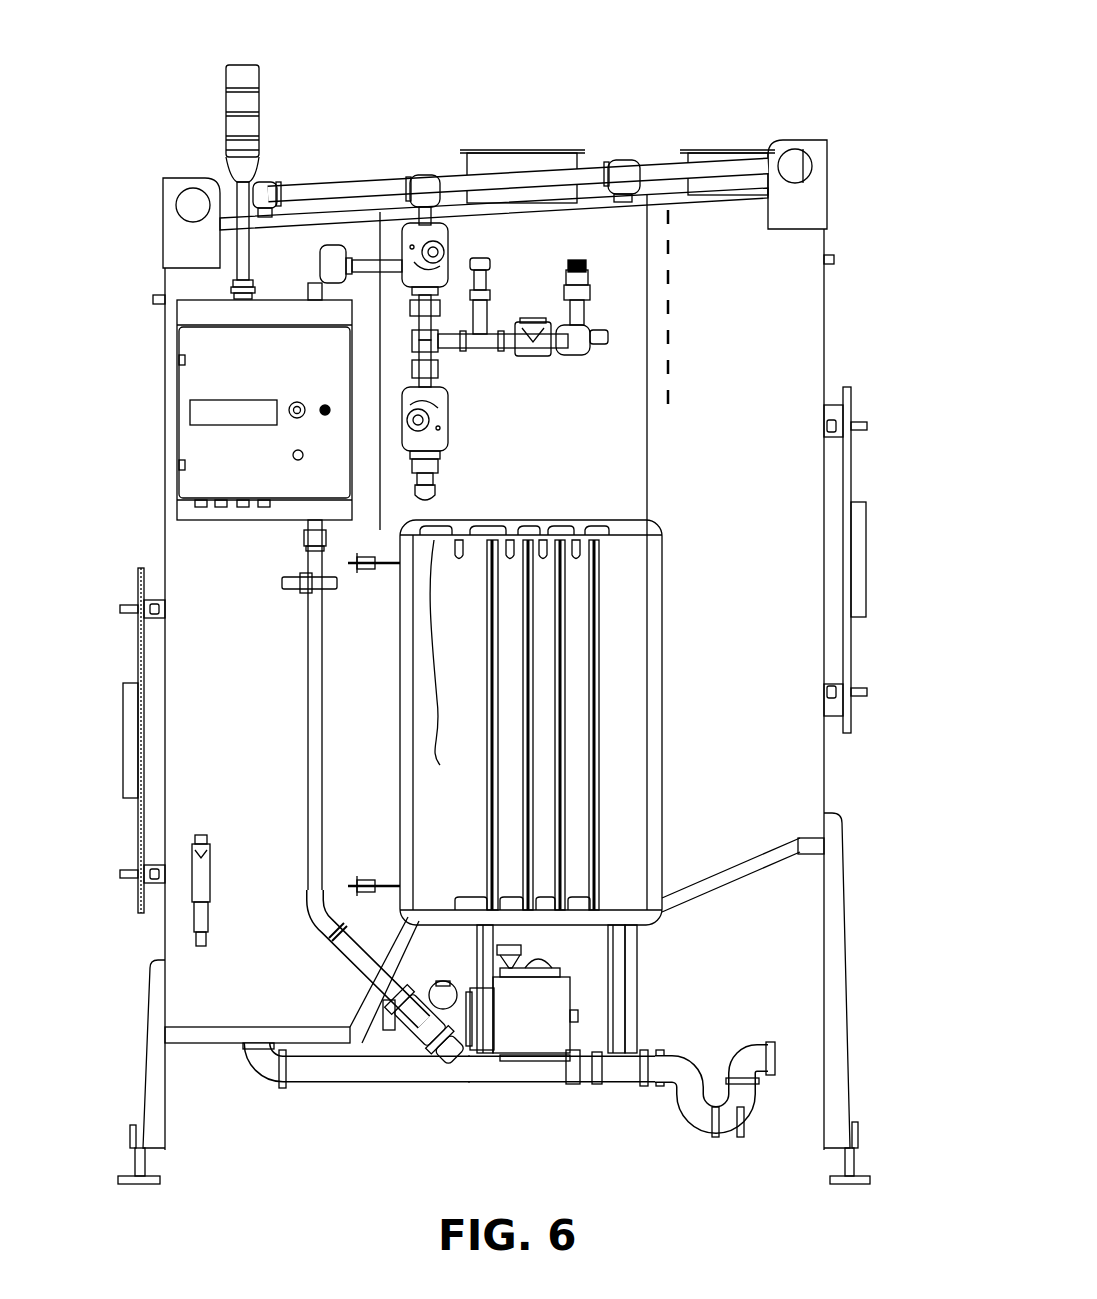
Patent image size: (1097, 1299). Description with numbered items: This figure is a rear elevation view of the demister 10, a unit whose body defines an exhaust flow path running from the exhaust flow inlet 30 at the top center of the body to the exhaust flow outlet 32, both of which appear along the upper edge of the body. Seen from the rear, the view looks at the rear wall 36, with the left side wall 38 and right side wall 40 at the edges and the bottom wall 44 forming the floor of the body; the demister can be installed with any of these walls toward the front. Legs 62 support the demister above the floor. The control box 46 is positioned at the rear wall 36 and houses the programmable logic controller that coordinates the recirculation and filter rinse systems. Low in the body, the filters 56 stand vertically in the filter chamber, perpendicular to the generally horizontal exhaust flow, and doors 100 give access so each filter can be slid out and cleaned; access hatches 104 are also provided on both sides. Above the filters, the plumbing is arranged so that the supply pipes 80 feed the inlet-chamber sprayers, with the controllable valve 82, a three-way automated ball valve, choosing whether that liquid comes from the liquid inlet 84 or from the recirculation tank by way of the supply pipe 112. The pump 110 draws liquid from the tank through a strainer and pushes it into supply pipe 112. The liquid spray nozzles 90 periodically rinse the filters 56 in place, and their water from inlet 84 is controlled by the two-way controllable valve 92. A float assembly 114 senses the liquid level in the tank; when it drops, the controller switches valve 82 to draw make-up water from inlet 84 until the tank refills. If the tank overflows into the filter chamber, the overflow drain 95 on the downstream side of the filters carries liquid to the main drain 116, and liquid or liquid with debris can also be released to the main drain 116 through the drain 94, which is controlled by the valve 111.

The demister 10 is at (776, 86).
The exhaust flow inlet 30 is at (516, 150).
The exhaust flow outlet 32 is at (730, 152).
The rear wall 36 is at (786, 298).
The left side wall 38 is at (824, 342).
The right side wall 40 is at (166, 383).
The bottom wall 44 is at (212, 1045).
The control box 46 is at (223, 452).
The filters 56 is at (490, 678).
The legs 62 is at (148, 1084).
The supply pipes 80 is at (356, 186).
The controllable valve 82 is at (440, 252).
The liquid inlet 84 is at (586, 267).
The liquid spray nozzles 90 is at (576, 563).
The controllable valve 92 is at (432, 416).
The drain 94 is at (260, 1066).
The overflow drain 95 is at (633, 964).
The doors 100 is at (428, 778).
The access hatches 104 is at (138, 640).
The pump 110 is at (528, 1027).
The valve 111 is at (512, 1084).
The supply pipe 112 is at (368, 265).
The float assembly 114 is at (199, 912).
The main drain 116 is at (746, 1052).